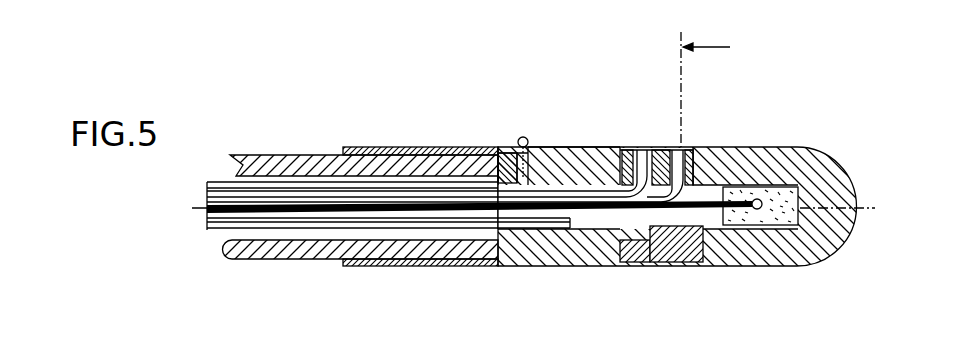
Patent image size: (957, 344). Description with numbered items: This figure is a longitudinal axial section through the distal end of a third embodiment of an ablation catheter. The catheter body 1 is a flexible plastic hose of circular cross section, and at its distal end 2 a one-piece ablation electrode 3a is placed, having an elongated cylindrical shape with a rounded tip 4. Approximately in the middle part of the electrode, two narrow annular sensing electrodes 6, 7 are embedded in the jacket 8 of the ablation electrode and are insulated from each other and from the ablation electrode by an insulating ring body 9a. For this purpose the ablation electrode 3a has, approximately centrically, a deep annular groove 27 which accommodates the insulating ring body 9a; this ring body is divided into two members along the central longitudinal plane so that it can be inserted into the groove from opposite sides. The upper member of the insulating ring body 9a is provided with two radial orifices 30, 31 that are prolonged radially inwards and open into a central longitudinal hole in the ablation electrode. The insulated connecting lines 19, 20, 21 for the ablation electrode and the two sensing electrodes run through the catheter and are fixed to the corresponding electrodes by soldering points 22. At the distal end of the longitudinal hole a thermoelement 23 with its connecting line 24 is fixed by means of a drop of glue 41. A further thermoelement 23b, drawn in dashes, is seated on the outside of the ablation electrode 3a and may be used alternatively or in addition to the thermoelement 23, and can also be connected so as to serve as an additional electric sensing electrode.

The catheter body 1 is at (243, 249).
The distal end 2 is at (432, 155).
The one-piece ablation electrode 3a is at (555, 147).
The tip 4 is at (858, 196).
The sensing electrode 6 is at (681, 298).
The sensing electrode 7 is at (641, 266).
The jacket 8 is at (563, 256).
The insulating ring body 9a is at (700, 147).
The insulated connecting line 19 is at (218, 229).
The insulated connecting line 20 is at (268, 206).
The insulated connecting line 21 is at (312, 199).
The soldering point 22 is at (674, 147).
The thermoelement 23 is at (762, 202).
The further thermoelement 23b is at (520, 138).
The connecting line 24 is at (397, 210).
The annular groove 27 is at (710, 261).
The radial orifice 30 is at (605, 147).
The radial orifice 31 is at (737, 147).
The drop of glue 41 is at (787, 226).